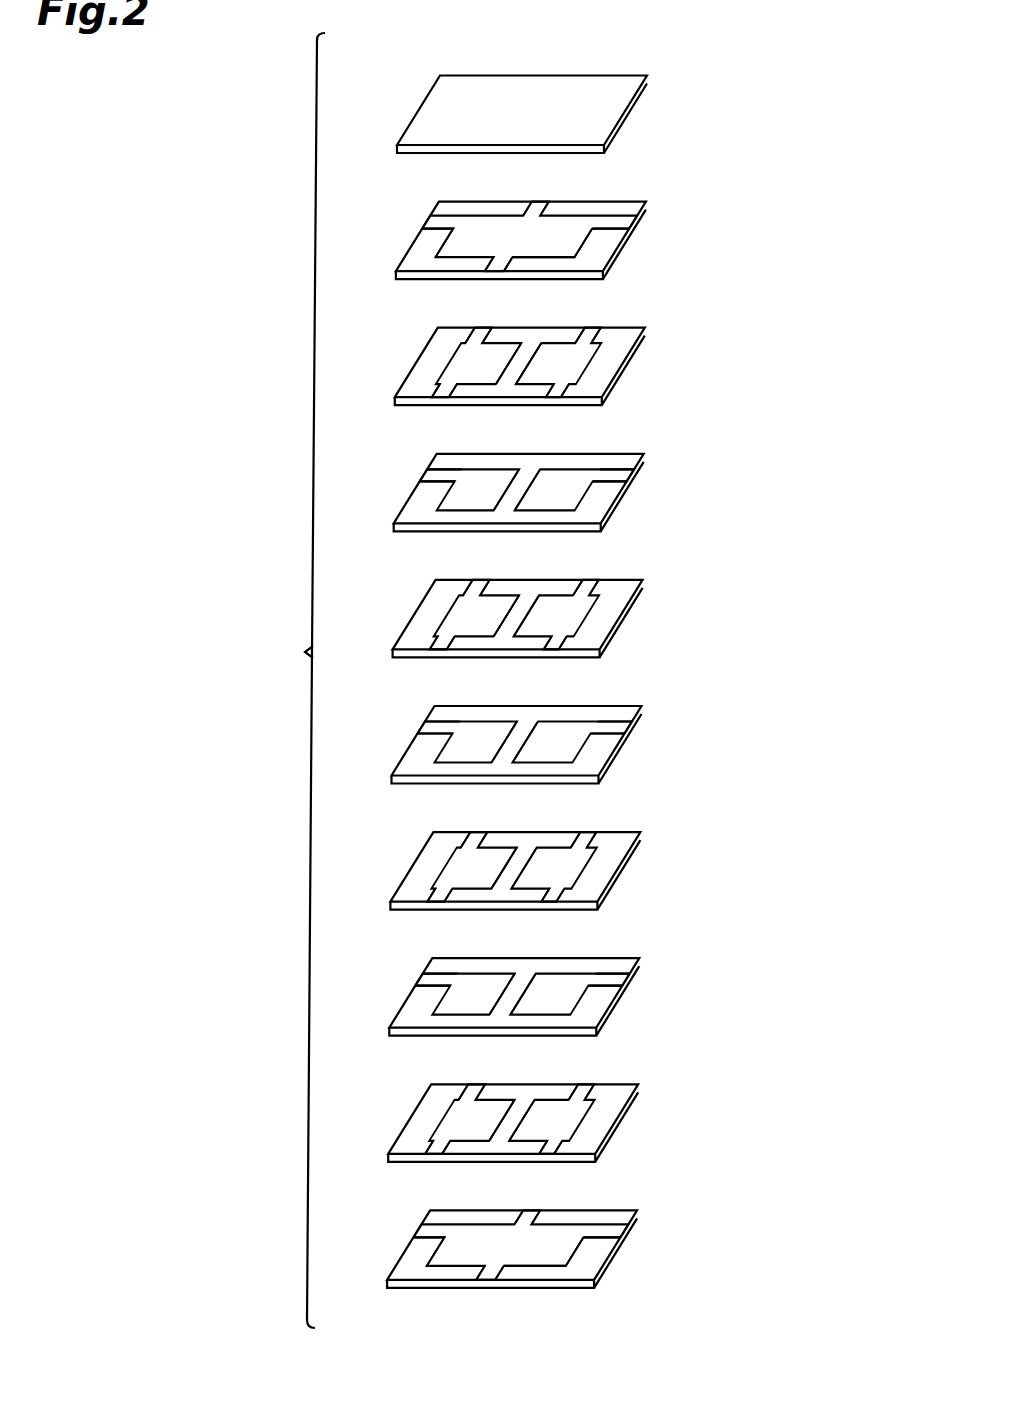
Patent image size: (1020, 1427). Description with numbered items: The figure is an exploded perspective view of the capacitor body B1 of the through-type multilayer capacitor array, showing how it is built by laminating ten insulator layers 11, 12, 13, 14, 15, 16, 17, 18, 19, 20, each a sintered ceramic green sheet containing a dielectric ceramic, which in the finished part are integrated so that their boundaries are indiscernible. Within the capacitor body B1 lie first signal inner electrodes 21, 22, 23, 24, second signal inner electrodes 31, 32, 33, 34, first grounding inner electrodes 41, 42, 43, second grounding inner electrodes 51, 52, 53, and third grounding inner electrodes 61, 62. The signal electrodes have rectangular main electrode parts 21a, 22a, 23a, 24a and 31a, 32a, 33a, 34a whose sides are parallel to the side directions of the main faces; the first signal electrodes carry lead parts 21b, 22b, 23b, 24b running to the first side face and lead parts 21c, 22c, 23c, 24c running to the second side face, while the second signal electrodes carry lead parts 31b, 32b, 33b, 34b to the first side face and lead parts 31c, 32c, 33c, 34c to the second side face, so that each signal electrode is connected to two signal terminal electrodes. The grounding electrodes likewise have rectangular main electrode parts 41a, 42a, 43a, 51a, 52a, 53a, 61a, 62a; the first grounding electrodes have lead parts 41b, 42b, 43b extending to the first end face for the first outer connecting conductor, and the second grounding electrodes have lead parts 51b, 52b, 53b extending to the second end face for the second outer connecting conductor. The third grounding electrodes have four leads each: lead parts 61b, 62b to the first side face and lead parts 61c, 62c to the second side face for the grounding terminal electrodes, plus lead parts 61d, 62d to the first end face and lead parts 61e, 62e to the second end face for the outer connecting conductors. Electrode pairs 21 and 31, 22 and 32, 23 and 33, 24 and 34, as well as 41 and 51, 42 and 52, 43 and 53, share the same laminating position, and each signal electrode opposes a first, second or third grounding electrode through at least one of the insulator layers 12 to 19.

The capacitor body B1 is at (293, 680).
The insulator layer 11 is at (633, 72).
The insulator layer 12 is at (633, 202).
The insulator layer 13 is at (628, 326).
The insulator layer 14 is at (627, 453).
The insulator layer 15 is at (628, 578).
The insulator layer 16 is at (627, 705).
The insulator layer 17 is at (628, 830).
The insulator layer 18 is at (627, 957).
The insulator layer 19 is at (623, 1080).
The insulator layer 20 is at (623, 1208).
The first signal inner electrode 21 is at (440, 385).
The main electrode part 21a is at (465, 365).
The lead part 21b is at (447, 400).
The lead part 21c is at (482, 336).
The first signal inner electrode 22 is at (440, 637).
The main electrode part 22a is at (465, 617).
The lead part 22b is at (447, 652).
The lead part 22c is at (482, 588).
The first signal inner electrode 23 is at (440, 889).
The main electrode part 23a is at (465, 869).
The lead part 23b is at (447, 904).
The lead part 23c is at (482, 840).
The first signal inner electrode 24 is at (433, 1138).
The main electrode part 24a is at (458, 1118).
The lead part 24b is at (440, 1152).
The lead part 24c is at (475, 1090).
The second signal inner electrode 31 is at (560, 388).
The main electrode part 31a is at (563, 363).
The lead part 31b is at (548, 400).
The lead part 31c is at (585, 336).
The second signal inner electrode 32 is at (560, 640).
The main electrode part 32a is at (563, 615).
The lead part 32b is at (548, 652).
The lead part 32c is at (585, 588).
The second signal inner electrode 33 is at (560, 892).
The main electrode part 33a is at (563, 867).
The lead part 33b is at (548, 904).
The lead part 33c is at (585, 840).
The second signal inner electrode 34 is at (553, 1142).
The main electrode part 34a is at (557, 1117).
The lead part 34b is at (540, 1152).
The lead part 34c is at (580, 1090).
The first grounding inner electrode 41 is at (435, 505).
The main electrode part 41a is at (467, 478).
The lead part 41b is at (433, 488).
The first grounding inner electrode 42 is at (435, 757).
The main electrode part 42a is at (467, 730).
The lead part 42b is at (433, 740).
The first grounding inner electrode 43 is at (435, 1009).
The main electrode part 43a is at (467, 982).
The lead part 43b is at (433, 992).
The second grounding inner electrode 51 is at (580, 500).
The main electrode part 51a is at (563, 475).
The lead part 51b is at (598, 488).
The second grounding inner electrode 52 is at (580, 752).
The main electrode part 52a is at (563, 727).
The lead part 52b is at (598, 740).
The second grounding inner electrode 53 is at (580, 1004).
The main electrode part 53a is at (563, 979).
The lead part 53b is at (598, 992).
The third grounding inner electrode 61 is at (440, 248).
The main electrode part 61a is at (562, 248).
The lead part 61b is at (487, 265).
The lead part 61c is at (538, 208).
The lead part 61d is at (440, 235).
The lead part 61e is at (615, 230).
The third grounding inner electrode 62 is at (430, 1257).
The main electrode part 62a is at (557, 1253).
The lead part 62b is at (482, 1270).
The lead part 62c is at (533, 1213).
The lead part 62d is at (430, 1243).
The lead part 62e is at (593, 1242).